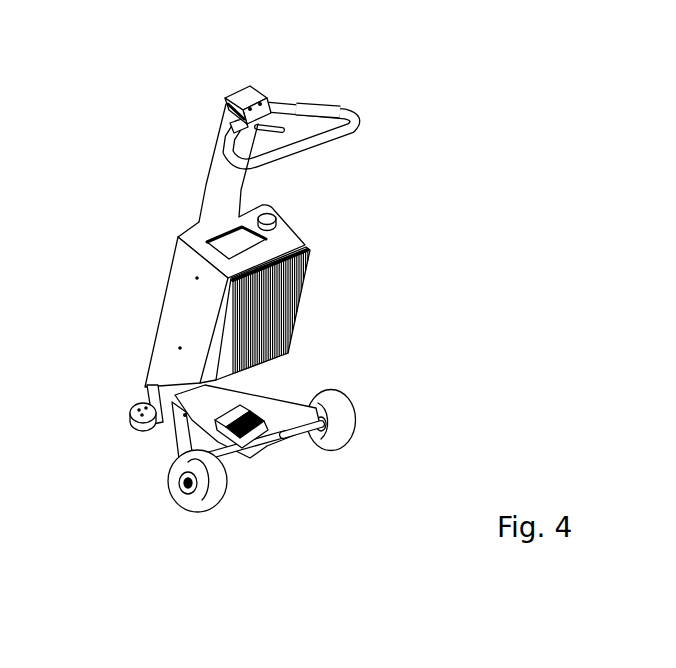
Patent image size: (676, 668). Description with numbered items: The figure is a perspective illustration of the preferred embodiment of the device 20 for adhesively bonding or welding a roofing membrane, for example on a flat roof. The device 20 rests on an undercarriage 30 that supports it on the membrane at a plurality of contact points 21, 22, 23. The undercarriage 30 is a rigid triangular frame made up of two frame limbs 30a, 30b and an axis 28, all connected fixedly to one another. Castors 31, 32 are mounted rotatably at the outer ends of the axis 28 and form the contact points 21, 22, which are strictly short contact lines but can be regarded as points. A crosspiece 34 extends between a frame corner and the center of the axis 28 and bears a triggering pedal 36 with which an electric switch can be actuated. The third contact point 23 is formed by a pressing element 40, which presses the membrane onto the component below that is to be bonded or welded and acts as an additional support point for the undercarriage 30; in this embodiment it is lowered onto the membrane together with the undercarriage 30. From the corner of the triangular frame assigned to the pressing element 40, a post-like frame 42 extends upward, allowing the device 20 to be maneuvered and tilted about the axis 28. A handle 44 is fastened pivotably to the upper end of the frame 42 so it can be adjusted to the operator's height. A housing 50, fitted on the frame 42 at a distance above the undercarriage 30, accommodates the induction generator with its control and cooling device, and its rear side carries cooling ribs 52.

The device 20 is at (353, 189).
The contact point 21 is at (187, 508).
The contact point 22 is at (325, 450).
The contact point 23 is at (142, 433).
The axis 28 is at (297, 440).
The undercarriage 30 is at (278, 400).
The frame limb 30a is at (173, 452).
The frame limb 30b is at (318, 402).
The castor 31 is at (178, 497).
The castor 32 is at (347, 423).
The crosspiece 34 is at (257, 390).
The triggering pedal 36 is at (248, 462).
The pressing element 40 is at (133, 423).
The post-like frame 42 is at (218, 170).
The handle 44 is at (352, 103).
The housing 50 is at (176, 317).
The cooling ribs 52 is at (308, 268).